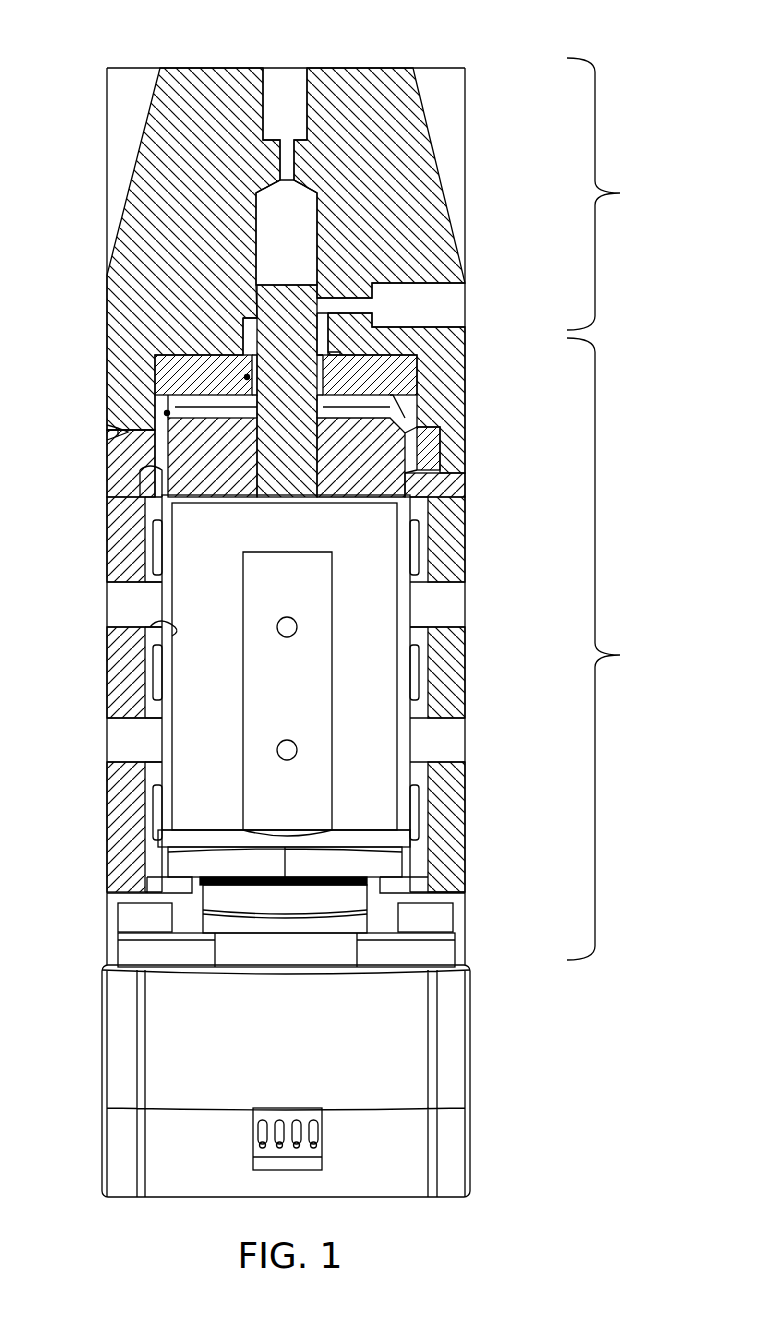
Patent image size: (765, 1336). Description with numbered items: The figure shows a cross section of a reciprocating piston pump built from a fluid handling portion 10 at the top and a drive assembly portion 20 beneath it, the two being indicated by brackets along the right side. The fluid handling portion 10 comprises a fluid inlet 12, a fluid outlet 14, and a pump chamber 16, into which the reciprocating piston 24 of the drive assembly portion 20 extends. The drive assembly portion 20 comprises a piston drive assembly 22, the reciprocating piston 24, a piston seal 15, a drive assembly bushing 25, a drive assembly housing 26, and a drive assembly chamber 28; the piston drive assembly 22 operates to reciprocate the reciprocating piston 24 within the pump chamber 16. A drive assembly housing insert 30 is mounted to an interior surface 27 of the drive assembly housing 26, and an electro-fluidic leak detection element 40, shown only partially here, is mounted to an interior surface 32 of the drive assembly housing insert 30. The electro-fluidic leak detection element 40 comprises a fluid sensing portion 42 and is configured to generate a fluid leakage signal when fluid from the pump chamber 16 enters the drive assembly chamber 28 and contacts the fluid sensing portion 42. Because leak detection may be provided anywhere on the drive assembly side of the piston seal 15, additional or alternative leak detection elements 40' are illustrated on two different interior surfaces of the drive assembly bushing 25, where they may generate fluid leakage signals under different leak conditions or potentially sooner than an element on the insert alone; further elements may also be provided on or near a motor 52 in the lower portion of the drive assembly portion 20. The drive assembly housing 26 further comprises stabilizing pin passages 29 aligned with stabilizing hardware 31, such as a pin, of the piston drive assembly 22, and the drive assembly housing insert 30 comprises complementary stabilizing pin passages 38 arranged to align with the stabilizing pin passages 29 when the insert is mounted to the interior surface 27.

The fluid handling portion 10 is at (611, 194).
The fluid inlet 12 is at (433, 297).
The fluid outlet 14 is at (286, 88).
The piston seal 15 is at (340, 348).
The pump chamber 16 is at (263, 233).
The drive assembly portion 20 is at (611, 649).
The piston drive assembly 22 is at (208, 570).
The reciprocating piston 24 is at (258, 325).
The drive assembly bushing 25 is at (180, 375).
The drive assembly housing 26 is at (463, 878).
The interior surface 27 is at (150, 480).
The drive assembly chamber 28 is at (393, 407).
The stabilizing pin passage 29 is at (447, 633).
The drive assembly housing insert 30 is at (150, 703).
The stabilizing hardware 31 is at (443, 612).
The interior surface 32 is at (177, 627).
The complementary stabilizing pin passage 38 is at (437, 562).
The electro-fluidic leak detection element 40 is at (461, 536).
The additional or alternative leak detection element 40' is at (151, 393).
The fluid sensing portion 42 is at (413, 798).
The motor 52 is at (350, 892).